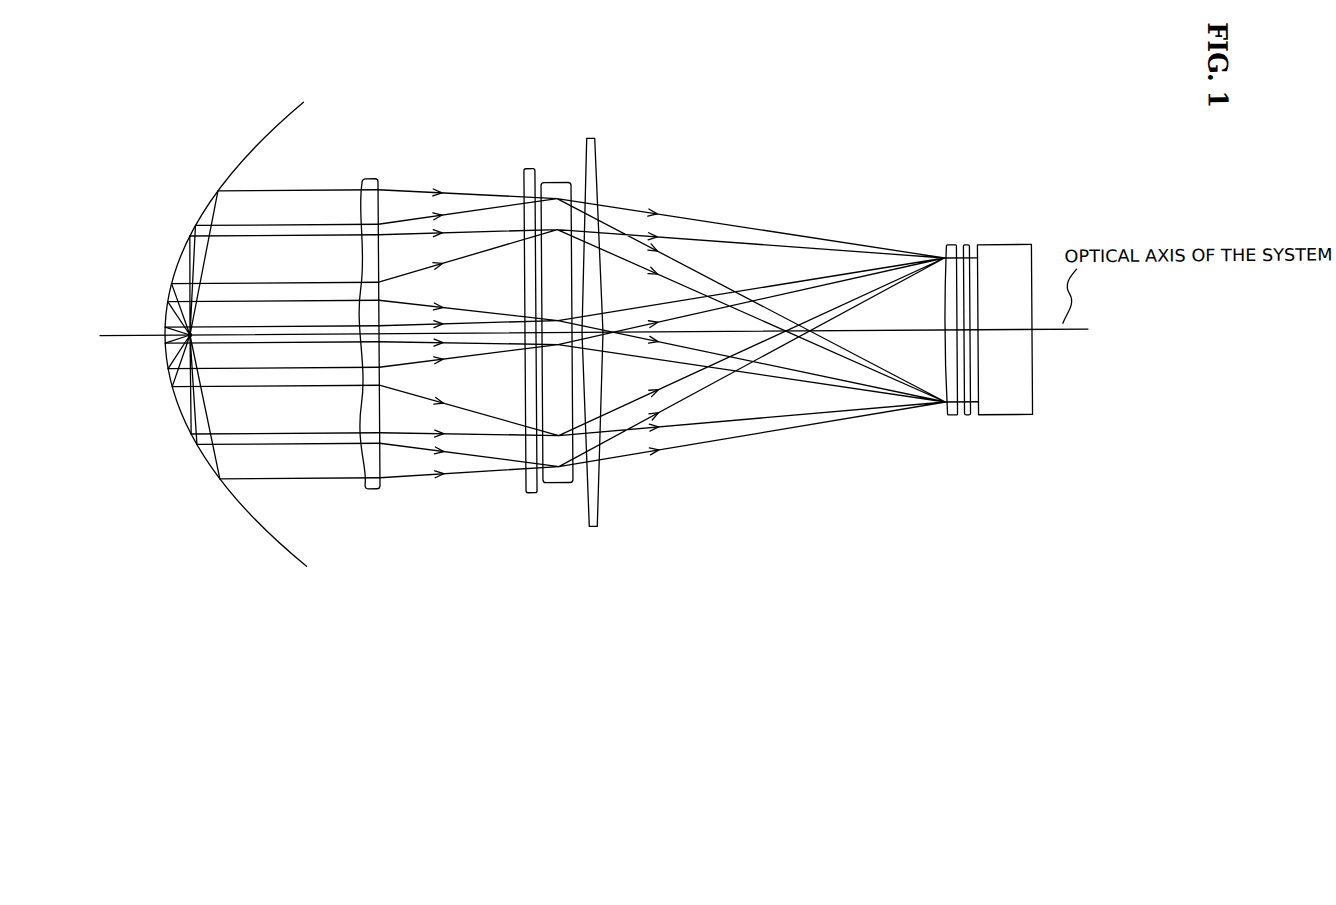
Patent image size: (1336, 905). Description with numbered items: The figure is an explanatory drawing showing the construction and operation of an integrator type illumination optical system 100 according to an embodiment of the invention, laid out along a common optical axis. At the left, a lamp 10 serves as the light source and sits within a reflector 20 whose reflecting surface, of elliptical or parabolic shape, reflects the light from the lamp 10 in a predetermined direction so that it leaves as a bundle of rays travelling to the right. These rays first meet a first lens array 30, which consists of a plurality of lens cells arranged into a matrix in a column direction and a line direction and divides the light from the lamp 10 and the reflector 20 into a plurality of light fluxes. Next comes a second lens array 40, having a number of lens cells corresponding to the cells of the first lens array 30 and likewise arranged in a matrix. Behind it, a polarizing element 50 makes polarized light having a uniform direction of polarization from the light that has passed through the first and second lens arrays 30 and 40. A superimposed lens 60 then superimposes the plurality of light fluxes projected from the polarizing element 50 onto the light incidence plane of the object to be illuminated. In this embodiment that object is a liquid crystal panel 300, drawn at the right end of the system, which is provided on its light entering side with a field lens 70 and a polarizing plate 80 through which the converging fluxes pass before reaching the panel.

The lamp 10 is at (168, 341).
The reflector 20 is at (183, 417).
The first lens array 30 is at (375, 490).
The second lens array 40 is at (530, 496).
The polarizing element 50 is at (557, 486).
The superimposed lens 60 is at (598, 512).
The field lens 70 is at (948, 421).
The polarizing plate 80 is at (967, 421).
The liquid crystal panel 300 is at (1017, 421).
The integrator type illumination optical system 100 is at (548, 314).